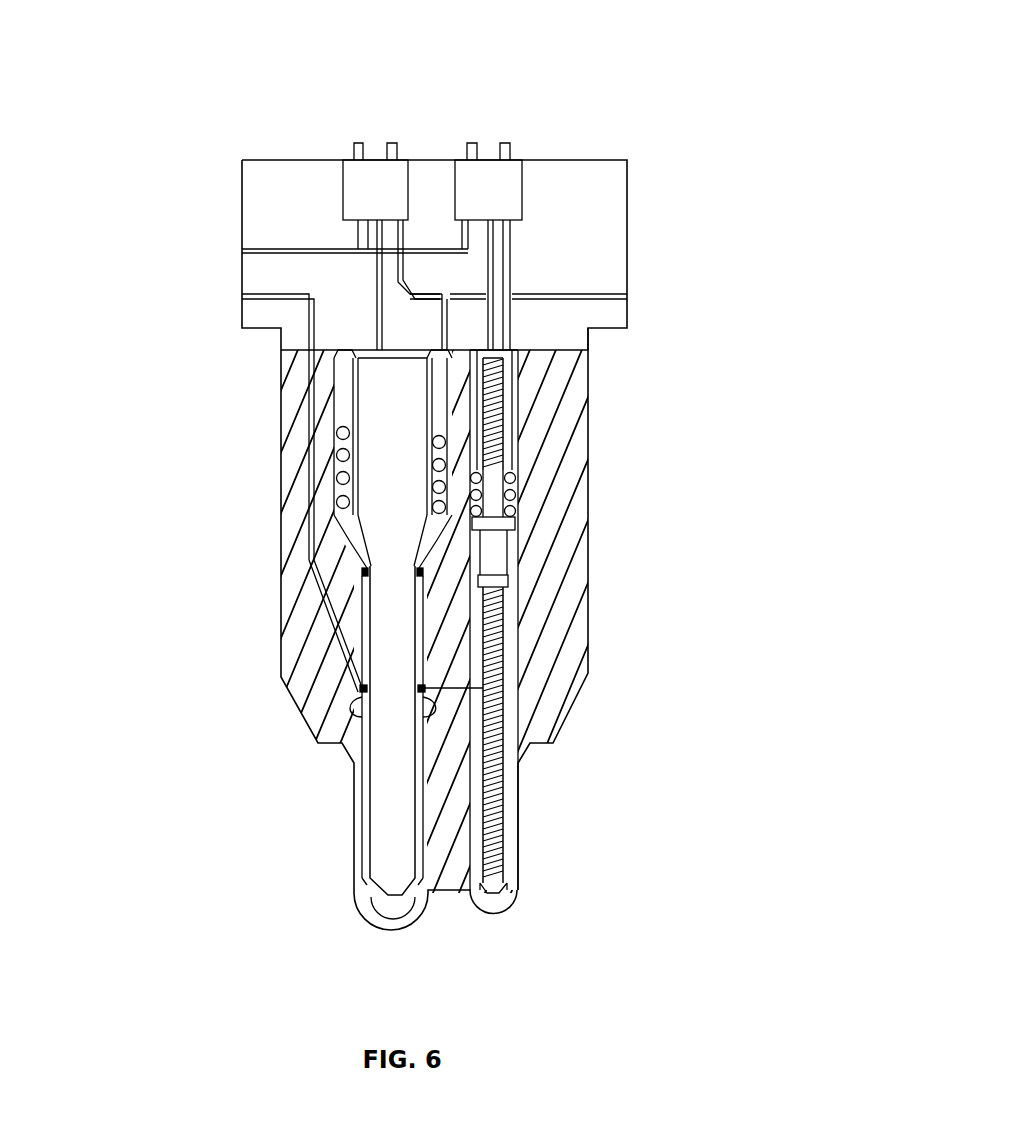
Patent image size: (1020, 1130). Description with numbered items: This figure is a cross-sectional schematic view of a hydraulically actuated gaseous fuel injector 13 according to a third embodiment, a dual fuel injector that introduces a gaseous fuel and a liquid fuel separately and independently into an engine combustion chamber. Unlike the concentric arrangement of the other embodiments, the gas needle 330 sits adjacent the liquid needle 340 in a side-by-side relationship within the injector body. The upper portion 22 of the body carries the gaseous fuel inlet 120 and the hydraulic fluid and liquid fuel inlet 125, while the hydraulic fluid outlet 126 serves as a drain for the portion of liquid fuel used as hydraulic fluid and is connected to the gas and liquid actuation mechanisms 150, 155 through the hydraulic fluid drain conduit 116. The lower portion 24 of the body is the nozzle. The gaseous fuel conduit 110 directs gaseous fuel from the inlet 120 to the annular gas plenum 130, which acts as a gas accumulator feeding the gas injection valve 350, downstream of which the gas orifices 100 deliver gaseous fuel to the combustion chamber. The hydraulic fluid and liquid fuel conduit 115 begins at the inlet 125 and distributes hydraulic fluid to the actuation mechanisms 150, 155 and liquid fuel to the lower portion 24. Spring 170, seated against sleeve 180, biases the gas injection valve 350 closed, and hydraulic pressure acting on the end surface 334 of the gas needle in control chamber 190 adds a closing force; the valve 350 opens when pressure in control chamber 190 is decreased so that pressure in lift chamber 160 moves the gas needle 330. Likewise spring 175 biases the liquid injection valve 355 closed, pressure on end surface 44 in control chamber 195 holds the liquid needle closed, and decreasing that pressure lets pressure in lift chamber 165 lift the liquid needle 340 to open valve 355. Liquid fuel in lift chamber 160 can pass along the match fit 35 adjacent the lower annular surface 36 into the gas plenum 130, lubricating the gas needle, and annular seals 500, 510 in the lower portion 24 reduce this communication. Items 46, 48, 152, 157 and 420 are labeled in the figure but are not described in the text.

The hydraulically actuated gaseous fuel injector 13 is at (652, 108).
The upper portion 22 is at (242, 207).
The lower portion 24 is at (281, 630).
The match fit 35 is at (352, 657).
The lower annular surface 36 is at (335, 583).
The end surface 44 is at (530, 350).
The flange 46 is at (520, 530).
The collar 48 is at (515, 580).
The gas orifices 100 is at (355, 896).
The gaseous fuel conduit 110 is at (316, 478).
The hydraulic fluid and liquid fuel conduit 115 is at (603, 293).
The hydraulic fluid drain conduit 116 is at (257, 248).
The gaseous fuel inlet 120 is at (242, 293).
The hydraulic fluid and liquid fuel inlet 125 is at (627, 293).
The hydraulic fluid outlet 126 is at (242, 248).
The annular gas plenum 130 is at (362, 702).
The gas actuation mechanism 150 is at (378, 183).
The first lead 152 is at (372, 286).
The liquid actuation mechanism 155 is at (497, 186).
The second lead 157 is at (510, 253).
The lift chamber 160 is at (332, 562).
The lift chamber 165 is at (508, 566).
The spring 170 is at (450, 442).
The spring 175 is at (520, 477).
The sleeve 180 is at (343, 393).
The control chamber 190 is at (338, 350).
The control chamber 195 is at (505, 350).
The gas needle 330 is at (395, 803).
The end surface 334 is at (352, 362).
The liquid needle 340 is at (497, 815).
The gas injection valve 350 is at (362, 883).
The liquid injection valve 355 is at (510, 888).
The coil region 420 is at (272, 446).
The annular seal 500 is at (336, 590).
The annular seal 510 is at (503, 697).